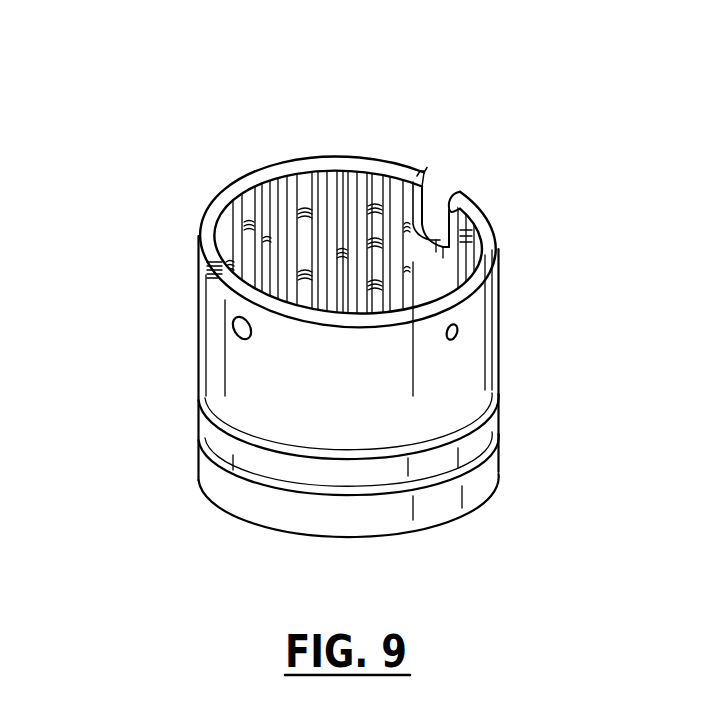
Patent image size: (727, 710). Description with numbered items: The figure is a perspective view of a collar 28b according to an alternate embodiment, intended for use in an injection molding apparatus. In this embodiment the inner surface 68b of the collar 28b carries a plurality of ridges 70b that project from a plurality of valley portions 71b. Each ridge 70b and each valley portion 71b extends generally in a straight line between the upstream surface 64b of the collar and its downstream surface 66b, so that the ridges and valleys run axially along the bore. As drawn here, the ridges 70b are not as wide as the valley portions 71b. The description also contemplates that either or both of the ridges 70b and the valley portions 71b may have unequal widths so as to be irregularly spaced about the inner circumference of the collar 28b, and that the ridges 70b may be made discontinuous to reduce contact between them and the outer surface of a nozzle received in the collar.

The collar 28b is at (356, 297).
The upstream surface 64b is at (208, 214).
The downstream surface 66b is at (475, 502).
The inner surface 68b is at (337, 185).
The ridges 70b is at (368, 188).
The valley portions 71b is at (406, 206).